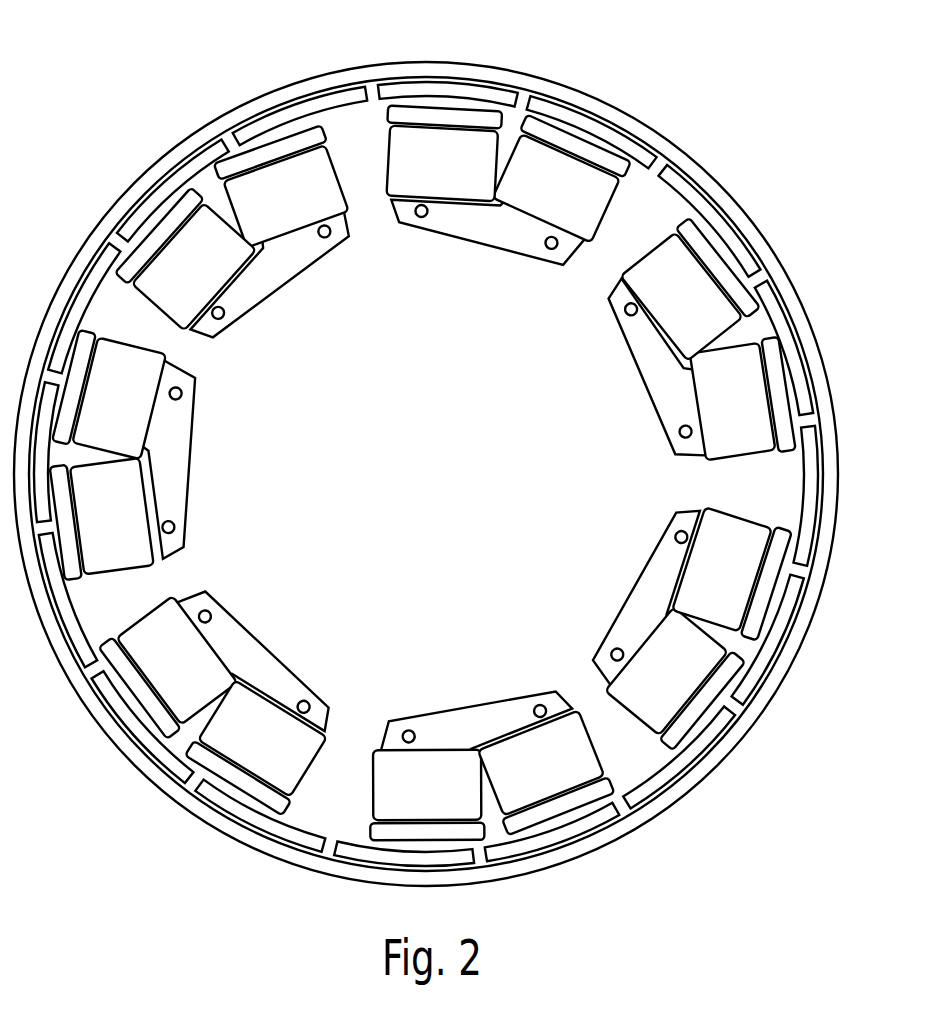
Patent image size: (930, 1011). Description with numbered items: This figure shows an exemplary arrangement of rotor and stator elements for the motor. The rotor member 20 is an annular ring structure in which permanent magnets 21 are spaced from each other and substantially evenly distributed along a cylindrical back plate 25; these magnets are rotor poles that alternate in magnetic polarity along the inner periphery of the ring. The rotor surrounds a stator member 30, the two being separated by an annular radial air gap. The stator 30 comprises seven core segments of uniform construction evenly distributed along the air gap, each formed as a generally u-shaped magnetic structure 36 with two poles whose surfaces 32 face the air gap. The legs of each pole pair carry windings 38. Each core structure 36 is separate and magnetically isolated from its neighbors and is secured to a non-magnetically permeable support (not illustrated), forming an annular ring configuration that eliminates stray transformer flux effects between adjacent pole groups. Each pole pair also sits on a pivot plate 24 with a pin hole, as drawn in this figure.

The rotor member 20 is at (439, 449).
The permanent magnets 21 is at (683, 170).
The pivot plate 24 is at (520, 255).
The cylindrical back plate 25 is at (617, 110).
The stator member 30 is at (435, 448).
The pole surfaces 32 is at (423, 115).
The u-shaped magnetic structure 36 is at (422, 226).
The windings 38 is at (457, 140).